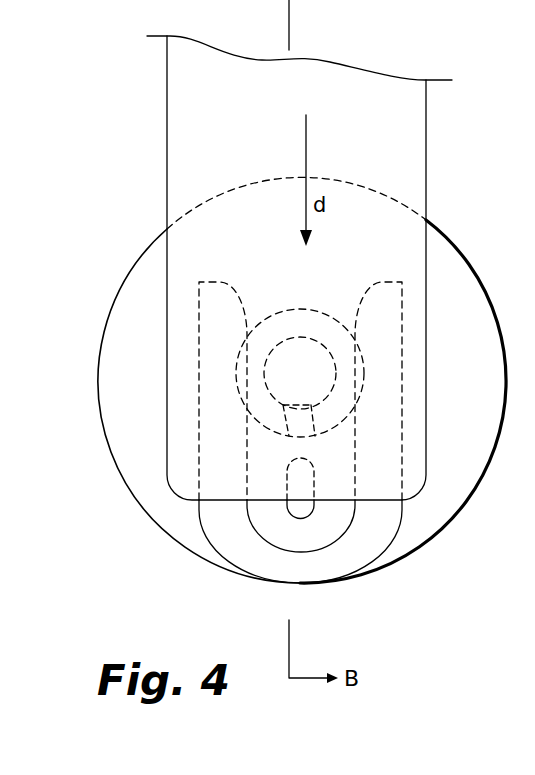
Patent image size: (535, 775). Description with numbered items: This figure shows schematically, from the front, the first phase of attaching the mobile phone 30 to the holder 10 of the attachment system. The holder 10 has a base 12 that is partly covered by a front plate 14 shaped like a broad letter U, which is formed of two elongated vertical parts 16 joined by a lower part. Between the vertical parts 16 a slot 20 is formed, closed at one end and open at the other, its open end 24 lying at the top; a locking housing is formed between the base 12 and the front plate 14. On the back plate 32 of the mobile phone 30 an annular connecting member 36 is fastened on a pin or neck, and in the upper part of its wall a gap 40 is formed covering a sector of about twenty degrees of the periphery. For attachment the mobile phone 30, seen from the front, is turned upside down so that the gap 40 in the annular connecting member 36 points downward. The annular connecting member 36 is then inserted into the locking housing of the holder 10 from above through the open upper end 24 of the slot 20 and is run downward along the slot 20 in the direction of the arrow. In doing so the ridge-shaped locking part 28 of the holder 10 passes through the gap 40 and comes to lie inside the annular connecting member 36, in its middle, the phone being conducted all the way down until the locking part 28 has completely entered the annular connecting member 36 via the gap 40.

The holder 10 is at (298, 340).
The base 12 is at (148, 265).
The front plate 14 is at (378, 430).
The elongated part 16 is at (160, 351).
The slot 20 is at (345, 511).
The open end 24 is at (255, 286).
The locking part 28 is at (290, 508).
The mobile phone 30 is at (258, 263).
The back plate 32 is at (380, 93).
The annular connecting member 36 is at (318, 318).
The gap 40 is at (287, 432).